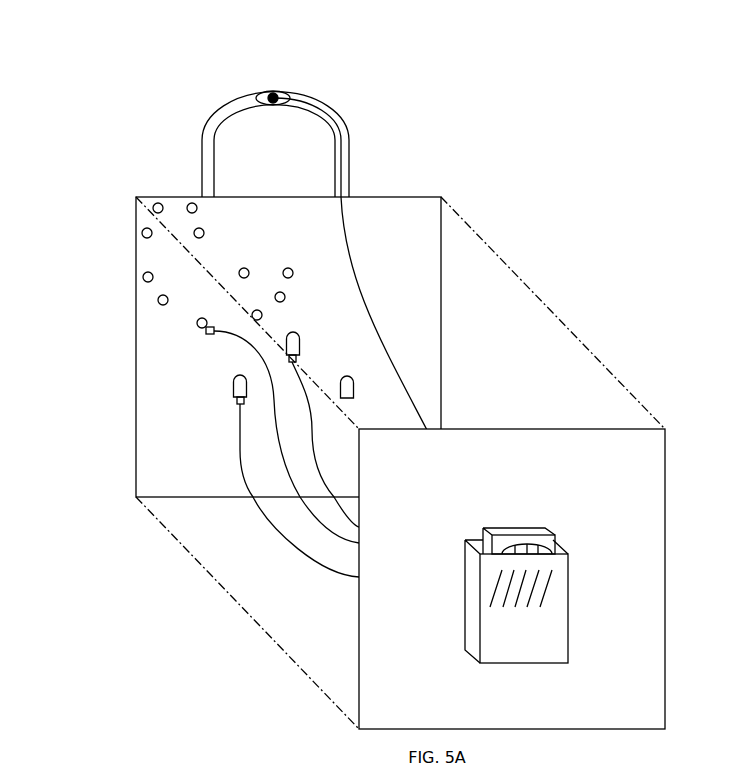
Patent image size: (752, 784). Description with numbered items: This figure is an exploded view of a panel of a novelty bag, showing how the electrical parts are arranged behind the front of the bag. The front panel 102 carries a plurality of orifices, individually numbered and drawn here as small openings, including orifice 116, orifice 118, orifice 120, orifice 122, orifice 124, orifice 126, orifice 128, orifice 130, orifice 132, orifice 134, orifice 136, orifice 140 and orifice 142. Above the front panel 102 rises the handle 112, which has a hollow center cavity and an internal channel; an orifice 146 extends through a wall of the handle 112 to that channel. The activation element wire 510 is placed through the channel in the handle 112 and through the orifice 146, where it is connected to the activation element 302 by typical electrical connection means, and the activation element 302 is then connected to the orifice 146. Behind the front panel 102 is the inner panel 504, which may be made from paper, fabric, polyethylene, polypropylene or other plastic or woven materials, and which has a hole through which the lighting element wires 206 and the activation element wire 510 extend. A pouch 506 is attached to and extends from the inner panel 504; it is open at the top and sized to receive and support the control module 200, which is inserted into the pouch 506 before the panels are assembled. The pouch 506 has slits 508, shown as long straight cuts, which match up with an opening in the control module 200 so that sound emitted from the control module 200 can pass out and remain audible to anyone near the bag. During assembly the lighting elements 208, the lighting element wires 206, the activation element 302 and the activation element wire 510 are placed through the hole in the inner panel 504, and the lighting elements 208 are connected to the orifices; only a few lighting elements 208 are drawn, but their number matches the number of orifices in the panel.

The front panel 102 is at (603, 270).
The handle 112 is at (323, 100).
The orifice 146 is at (258, 96).
The activation element 302 is at (277, 93).
The activation element wire 510 is at (405, 390).
The orifice 126 is at (153, 206).
The orifice 128 is at (190, 203).
The orifice 130 is at (203, 229).
The orifice 124 is at (141, 234).
The orifice 122 is at (142, 278).
The orifice 142 is at (158, 304).
The orifice 132 is at (247, 268).
The orifice 134 is at (291, 268).
The orifice 136 is at (286, 297).
The orifice 140 is at (263, 315).
The lighting element 208 is at (207, 335).
The orifice 118 is at (301, 341).
The orifice 120 is at (232, 387).
The orifice 116 is at (356, 385).
The lighting element wires 206 is at (318, 535).
The inner panel 504 is at (657, 545).
The pouch 506 is at (552, 648).
The slits 508 is at (533, 595).
The control module 200 is at (533, 532).